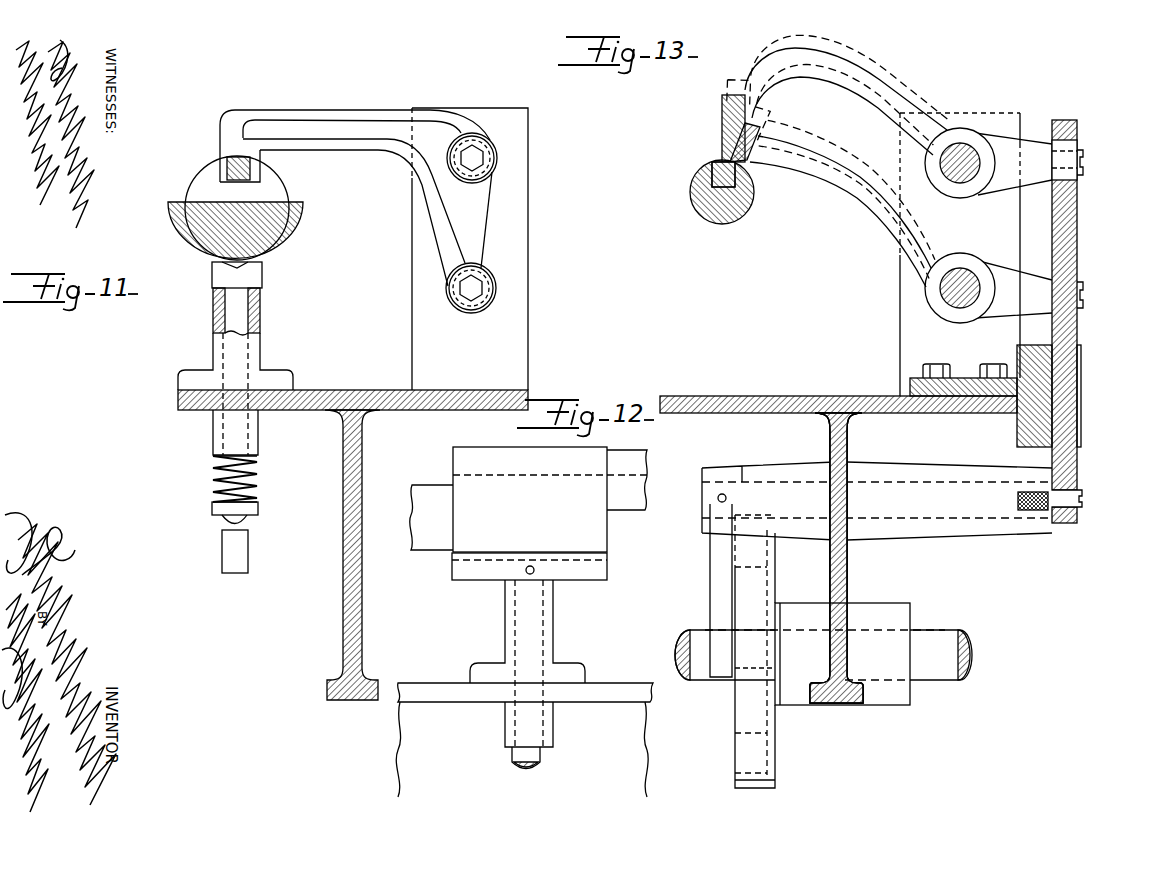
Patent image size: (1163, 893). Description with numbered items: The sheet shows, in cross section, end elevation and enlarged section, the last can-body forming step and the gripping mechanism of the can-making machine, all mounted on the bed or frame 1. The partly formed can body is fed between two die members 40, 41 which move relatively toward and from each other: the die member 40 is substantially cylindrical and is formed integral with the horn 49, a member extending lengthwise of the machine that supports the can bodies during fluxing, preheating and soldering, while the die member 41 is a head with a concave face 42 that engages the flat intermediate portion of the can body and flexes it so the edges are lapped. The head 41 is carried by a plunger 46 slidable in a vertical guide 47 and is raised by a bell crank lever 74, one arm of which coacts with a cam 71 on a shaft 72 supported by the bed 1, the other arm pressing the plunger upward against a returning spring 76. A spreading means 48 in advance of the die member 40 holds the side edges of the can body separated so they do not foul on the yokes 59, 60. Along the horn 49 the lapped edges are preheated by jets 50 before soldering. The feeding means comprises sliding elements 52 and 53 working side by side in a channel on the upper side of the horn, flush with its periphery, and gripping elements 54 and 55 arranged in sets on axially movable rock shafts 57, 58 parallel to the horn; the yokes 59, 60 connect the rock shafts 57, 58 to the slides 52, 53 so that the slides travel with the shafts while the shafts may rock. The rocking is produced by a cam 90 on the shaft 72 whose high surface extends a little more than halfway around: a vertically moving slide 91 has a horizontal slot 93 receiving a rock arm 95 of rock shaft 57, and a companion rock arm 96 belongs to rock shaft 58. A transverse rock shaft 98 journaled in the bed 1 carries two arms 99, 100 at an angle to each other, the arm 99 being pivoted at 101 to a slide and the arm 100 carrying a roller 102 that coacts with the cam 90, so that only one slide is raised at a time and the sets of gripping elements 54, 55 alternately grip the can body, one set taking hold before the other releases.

In FIG. 11, the bed or frame 1 is at (367, 390).
In FIG. 12, the bed or frame 1 is at (613, 686).
In FIG. 13, the bed or frame 1 is at (770, 396).
In FIG. 11, the die member 40 is at (280, 190).
In FIG. 12, the die member 40 is at (595, 533).
In FIG. 11, the die member (head) 41 is at (262, 271).
In FIG. 12, the die member (head) 41 is at (603, 568).
In FIG. 11, the concave face 42 is at (228, 264).
In FIG. 11, the plunger 46 is at (236, 316).
In FIG. 12, the plunger 46 is at (538, 757).
In FIG. 11, the vertical guide 47 is at (258, 352).
In FIG. 12, the vertical guide 47 is at (535, 622).
In FIG. 11, the spreading means (spreader) 48 is at (303, 229).
In FIG. 13, the horn 49 is at (705, 216).
In FIG. 13, the jets 50 is at (700, 190).
In FIG. 11, the sliding element (slide) 52 is at (227, 166).
In FIG. 13, the sliding element (slide) 52 is at (712, 170).
In FIG. 11, the sliding element (slide) 53 is at (228, 178).
In FIG. 13, the sliding element (slide) 53 is at (748, 180).
In FIG. 13, the gripping elements 54 is at (852, 72).
In FIG. 13, the gripping elements 55 is at (818, 182).
In FIG. 13, the rock shaft 57 is at (962, 178).
In FIG. 13, the rock shaft 58 is at (925, 294).
In FIG. 11, the yoke 59 is at (368, 108).
In FIG. 11, the yoke 60 is at (380, 158).
In FIG. 13, the cam 71 is at (735, 782).
In FIG. 13, the shaft 72 is at (958, 649).
In FIG. 11, the bell crank lever 74 is at (240, 558).
In FIG. 11, the returning spring 76 is at (214, 478).
In FIG. 13, the cam 90 is at (735, 733).
In FIG. 13, the vertically moving slide 91 is at (1072, 243).
In FIG. 13, the horizontal slot 93 is at (1078, 150).
In FIG. 13, the rock arm 95 is at (1005, 147).
In FIG. 13, the rock arm 96 is at (1000, 272).
In FIG. 13, the rock shaft 98 is at (965, 512).
In FIG. 13, the arm 99 is at (1030, 525).
In FIG. 13, the arm 100 is at (711, 586).
In FIG. 13, the pivot 101 is at (1084, 500).
In FIG. 13, the roller 102 is at (750, 668).